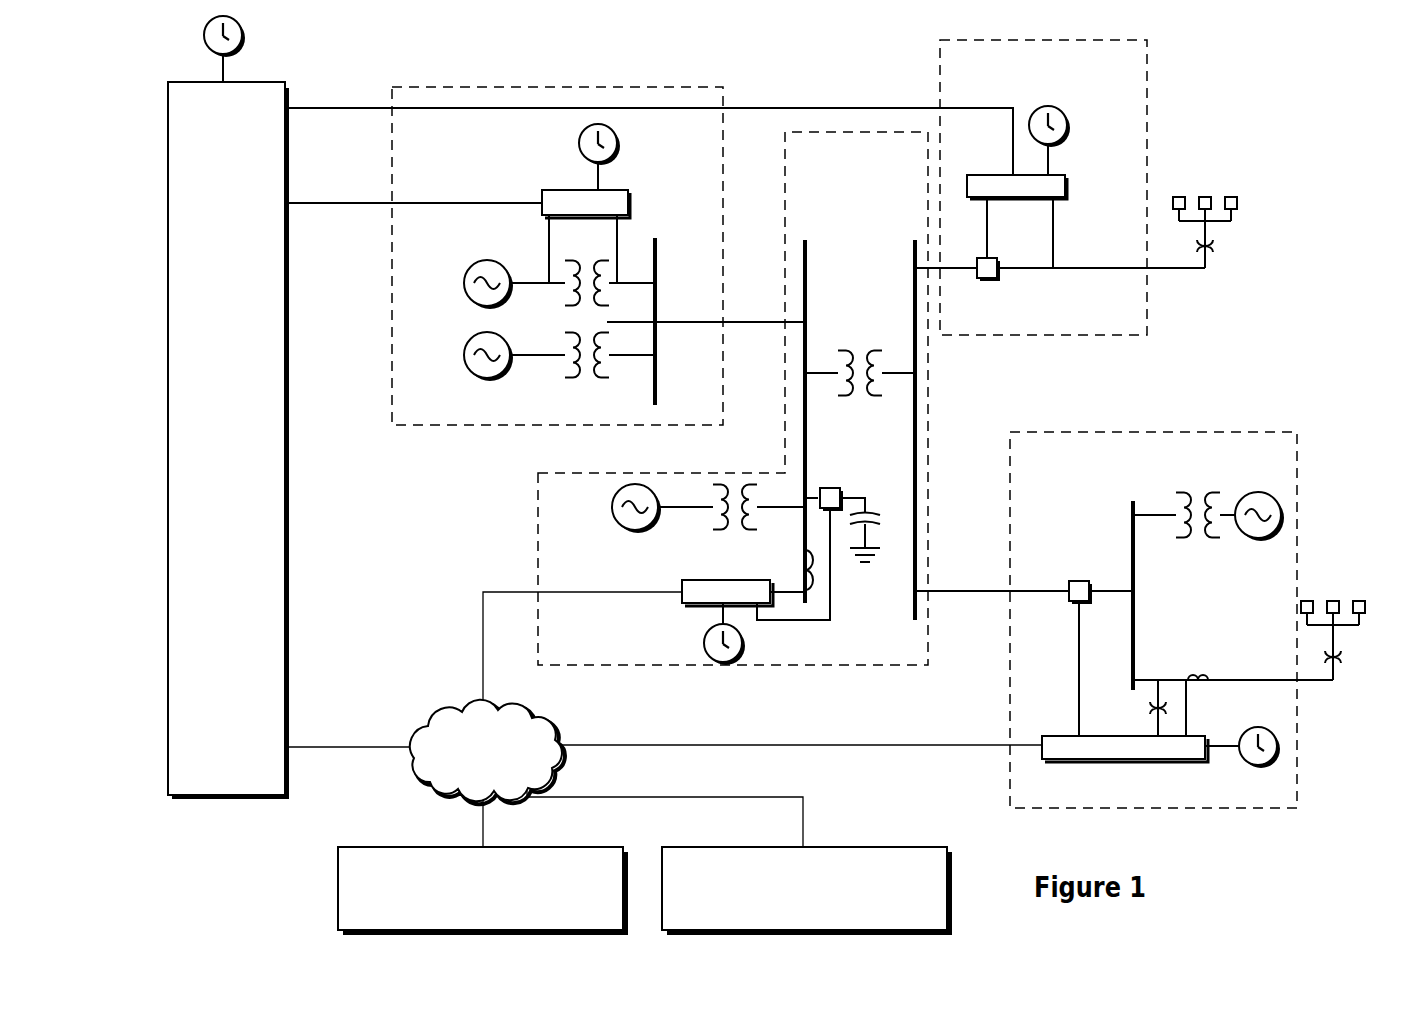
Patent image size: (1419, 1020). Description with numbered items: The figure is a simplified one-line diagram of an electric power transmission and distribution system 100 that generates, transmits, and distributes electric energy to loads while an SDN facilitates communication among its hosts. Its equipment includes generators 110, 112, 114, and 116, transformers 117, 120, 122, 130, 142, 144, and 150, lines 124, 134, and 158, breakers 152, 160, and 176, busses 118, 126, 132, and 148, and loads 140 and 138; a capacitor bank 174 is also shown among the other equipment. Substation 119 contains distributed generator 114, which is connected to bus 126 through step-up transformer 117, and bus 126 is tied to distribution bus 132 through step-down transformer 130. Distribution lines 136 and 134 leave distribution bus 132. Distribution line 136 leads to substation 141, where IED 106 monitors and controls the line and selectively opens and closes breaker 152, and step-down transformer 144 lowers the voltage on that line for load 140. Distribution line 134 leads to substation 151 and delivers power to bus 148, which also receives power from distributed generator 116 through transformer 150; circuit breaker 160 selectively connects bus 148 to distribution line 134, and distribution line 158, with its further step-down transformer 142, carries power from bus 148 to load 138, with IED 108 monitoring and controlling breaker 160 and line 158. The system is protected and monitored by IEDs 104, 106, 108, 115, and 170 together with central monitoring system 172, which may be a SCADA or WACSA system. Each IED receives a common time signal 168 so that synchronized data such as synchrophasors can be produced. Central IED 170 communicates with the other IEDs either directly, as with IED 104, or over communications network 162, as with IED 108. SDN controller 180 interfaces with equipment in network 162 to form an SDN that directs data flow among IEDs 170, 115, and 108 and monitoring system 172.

The electric power transmission and distribution system 100 is at (1275, 102).
The IED 104 is at (552, 190).
The IED 106 is at (983, 175).
The IED 108 is at (1168, 760).
The generator 110 is at (463, 283).
The generator 112 is at (463, 355).
The generator 114 is at (612, 507).
The IED 115 is at (756, 580).
The distributed generator 116 is at (1248, 538).
The step-up transformer 117 is at (712, 520).
The bus 118 is at (658, 382).
The substation 119 is at (666, 666).
The transformer 120 is at (562, 300).
The transformer 122 is at (596, 379).
The line 124 is at (744, 324).
The bus 126 is at (808, 400).
The step-down transformer 130 is at (858, 353).
The distribution bus 132 is at (912, 578).
The distribution line 134 is at (1028, 593).
The distribution line 136 is at (955, 270).
The load 138 is at (1333, 601).
The load 140 is at (1245, 203).
The substation 141 is at (1120, 336).
The step-down transformer 142 is at (1345, 660).
The step-down transformer 144 is at (1215, 246).
The bus 148 is at (1131, 502).
The transformer 150 is at (1192, 494).
The substation 151 is at (1228, 809).
The breaker 152 is at (997, 278).
The distribution line 158 is at (1200, 678).
The circuit breaker 160 is at (1078, 580).
The communications network 162 is at (487, 752).
The common time signal 168 is at (244, 32).
The central IED 170 is at (227, 439).
The central monitoring system 172 is at (482, 890).
The capacitor bank 174 is at (878, 512).
The breaker 176 is at (832, 488).
The SDN controller 180 is at (806, 890).